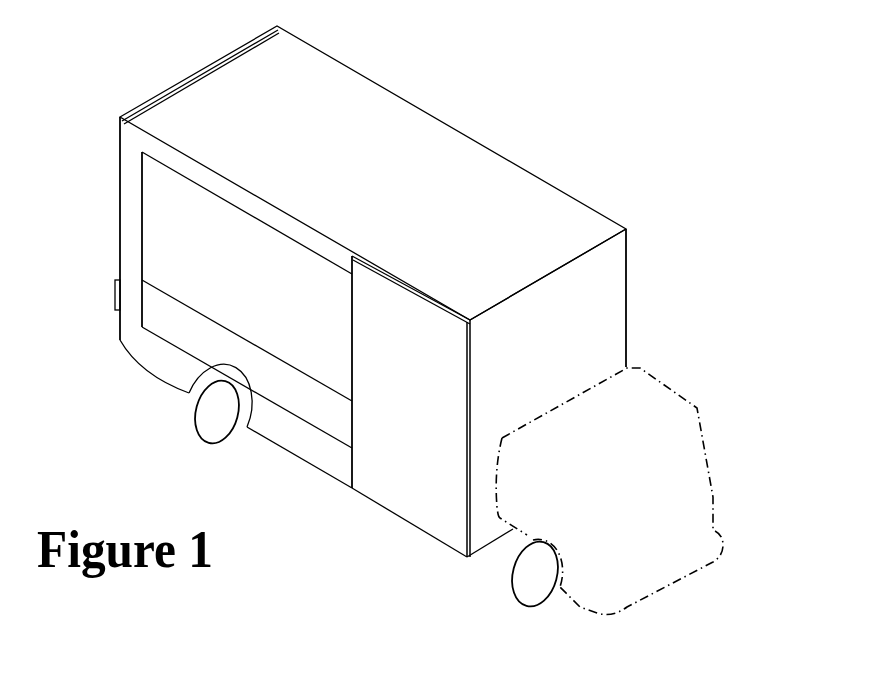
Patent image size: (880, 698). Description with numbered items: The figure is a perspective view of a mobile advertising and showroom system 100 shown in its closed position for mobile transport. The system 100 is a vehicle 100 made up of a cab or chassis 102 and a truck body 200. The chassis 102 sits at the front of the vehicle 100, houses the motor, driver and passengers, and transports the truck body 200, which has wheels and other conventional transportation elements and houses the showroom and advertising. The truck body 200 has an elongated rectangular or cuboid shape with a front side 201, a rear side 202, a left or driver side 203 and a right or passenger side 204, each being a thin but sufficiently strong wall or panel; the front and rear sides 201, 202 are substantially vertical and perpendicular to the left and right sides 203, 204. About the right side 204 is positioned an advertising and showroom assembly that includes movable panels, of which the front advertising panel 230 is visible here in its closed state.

The mobile advertising and/or showroom system 100 is at (714, 110).
The cab or chassis 102 is at (663, 407).
The truck body 200 is at (550, 145).
The front side 201 is at (603, 297).
The rear side 202 is at (97, 113).
The left side or driver side 203 is at (414, 79).
The right side or passenger side 204 is at (135, 317).
The front advertising panel 230 is at (415, 498).